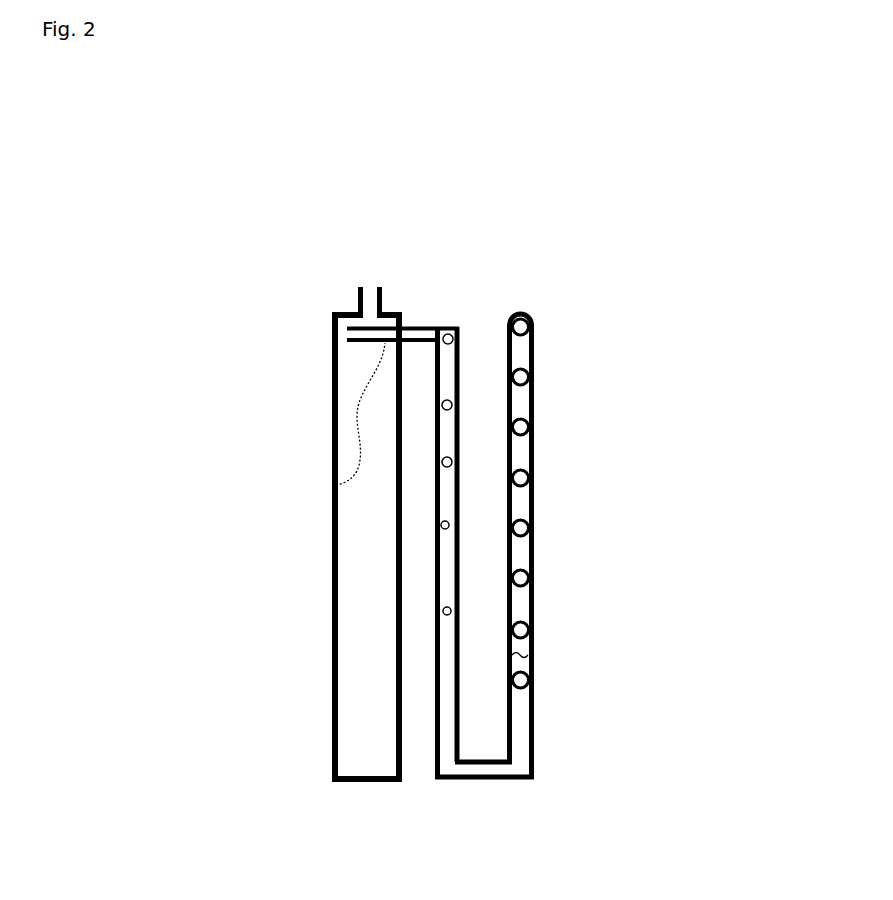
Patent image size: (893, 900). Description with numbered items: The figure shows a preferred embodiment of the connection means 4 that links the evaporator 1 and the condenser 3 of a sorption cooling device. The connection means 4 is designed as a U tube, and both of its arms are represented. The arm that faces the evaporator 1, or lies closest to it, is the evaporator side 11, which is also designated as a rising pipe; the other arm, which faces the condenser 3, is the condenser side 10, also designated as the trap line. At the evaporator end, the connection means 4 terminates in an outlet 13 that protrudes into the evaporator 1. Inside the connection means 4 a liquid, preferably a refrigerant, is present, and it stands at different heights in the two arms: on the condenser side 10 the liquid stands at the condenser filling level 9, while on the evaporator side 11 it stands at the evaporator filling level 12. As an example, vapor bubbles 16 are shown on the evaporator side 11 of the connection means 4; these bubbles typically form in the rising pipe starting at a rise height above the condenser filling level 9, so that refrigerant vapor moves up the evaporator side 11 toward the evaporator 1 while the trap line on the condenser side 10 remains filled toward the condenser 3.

The evaporator 1 is at (332, 396).
The outlet 13 is at (332, 486).
The filling level on the evaporator side 12 is at (460, 330).
The evaporator side 11 is at (435, 703).
The vapor bubbles 16 is at (452, 405).
The condenser 3 is at (534, 568).
The filling level on the condenser side 9 is at (534, 652).
The condenser side 10 is at (530, 760).
The connection means 4 is at (487, 782).